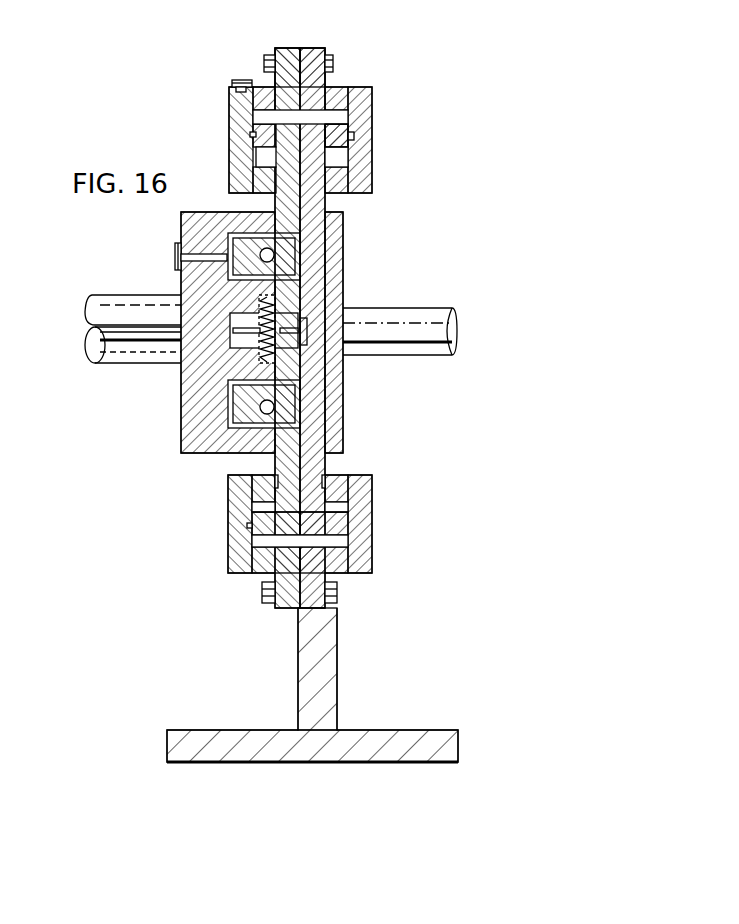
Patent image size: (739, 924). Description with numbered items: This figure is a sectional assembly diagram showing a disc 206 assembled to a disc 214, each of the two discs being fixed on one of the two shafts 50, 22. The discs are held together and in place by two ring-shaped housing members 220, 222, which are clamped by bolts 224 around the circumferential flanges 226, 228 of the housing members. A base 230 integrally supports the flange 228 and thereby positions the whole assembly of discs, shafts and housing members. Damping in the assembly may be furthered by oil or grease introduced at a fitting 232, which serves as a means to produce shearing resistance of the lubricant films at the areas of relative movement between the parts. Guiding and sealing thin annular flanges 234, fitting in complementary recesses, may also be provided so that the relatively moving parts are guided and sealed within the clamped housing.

The shaft 22 is at (422, 353).
The shaft 50 is at (150, 363).
The disc 206 is at (195, 438).
The disc 214 is at (332, 420).
The ring-shaped housing member 220 is at (235, 138).
The ring-shaped housing member 222 is at (372, 110).
The bolt 224 is at (333, 60).
The circumferential flange 226 is at (297, 50).
The circumferential flange 228 is at (313, 50).
The base 230 is at (375, 732).
The fitting 232 is at (235, 82).
The thin annular flange 234 is at (352, 133).